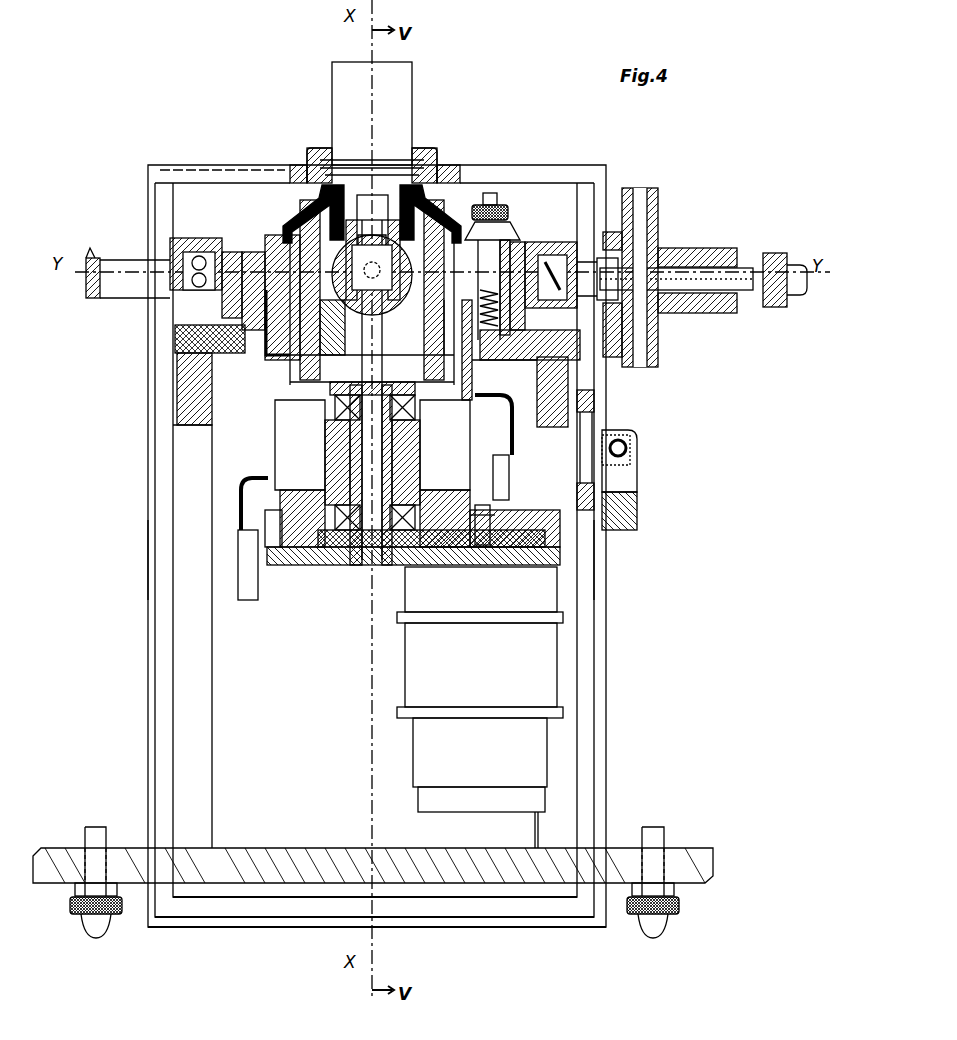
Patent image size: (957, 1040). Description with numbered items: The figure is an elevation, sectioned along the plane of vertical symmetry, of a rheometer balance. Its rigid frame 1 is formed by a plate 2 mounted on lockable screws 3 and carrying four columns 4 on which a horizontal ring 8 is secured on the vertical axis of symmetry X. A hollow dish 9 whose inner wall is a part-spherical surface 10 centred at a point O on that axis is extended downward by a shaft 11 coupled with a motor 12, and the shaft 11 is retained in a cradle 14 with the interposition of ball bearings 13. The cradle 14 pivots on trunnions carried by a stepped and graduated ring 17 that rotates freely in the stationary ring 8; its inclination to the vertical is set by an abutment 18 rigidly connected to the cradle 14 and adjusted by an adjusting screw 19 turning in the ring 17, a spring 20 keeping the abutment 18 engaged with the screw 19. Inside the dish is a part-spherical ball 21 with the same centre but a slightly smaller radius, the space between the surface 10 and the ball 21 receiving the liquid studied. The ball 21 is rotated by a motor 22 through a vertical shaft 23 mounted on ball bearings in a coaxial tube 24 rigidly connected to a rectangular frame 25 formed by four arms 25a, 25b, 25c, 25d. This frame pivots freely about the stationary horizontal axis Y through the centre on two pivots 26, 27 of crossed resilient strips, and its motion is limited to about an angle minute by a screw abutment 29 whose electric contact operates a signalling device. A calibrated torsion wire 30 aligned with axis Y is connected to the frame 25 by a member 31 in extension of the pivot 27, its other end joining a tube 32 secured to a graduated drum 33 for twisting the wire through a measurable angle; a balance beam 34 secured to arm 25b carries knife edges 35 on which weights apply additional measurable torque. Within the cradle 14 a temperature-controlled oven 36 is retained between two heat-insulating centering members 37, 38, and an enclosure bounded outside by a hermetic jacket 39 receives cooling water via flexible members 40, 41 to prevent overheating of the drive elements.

The rigid frame 1 is at (50, 890).
The plate 2 is at (268, 855).
The lockable screws 3 is at (126, 908).
The columns 4 is at (190, 441).
The horizontal ring 8 is at (186, 338).
The hollow dish 9 is at (300, 345).
The part-spherical surface 10 is at (366, 330).
The shaft 11 is at (332, 472).
The motor 12 is at (480, 707).
The ball bearings 13 is at (422, 412).
The cradle 14 is at (286, 236).
The stepped and graduated ring 17 is at (506, 258).
The abutment 18 is at (512, 286).
The adjusting screw 19 is at (498, 240).
The spring 20 is at (492, 352).
The part-spherical ball 21 is at (375, 281).
The motor 22 is at (372, 122).
The vertical shaft 23 is at (372, 228).
The coaxial tube 24 is at (388, 228).
The rectangular frame 25 is at (311, 148).
The frame arm 25a is at (258, 158).
The frame arm 25b is at (162, 551).
The frame arm 25c is at (297, 890).
The frame arm 25d is at (583, 556).
The pivot 26 is at (192, 262).
The pivot 27 is at (552, 262).
The screw abutment 29 is at (630, 447).
The calibrated torsion wire 30 is at (692, 268).
The member 31 is at (588, 300).
The tube 32 is at (690, 304).
The graduated drum 33 is at (655, 344).
The balance beam 34 is at (88, 317).
The knife edges 35 is at (90, 278).
The oven 36 is at (444, 327).
The centering member 37 is at (465, 386).
The centering member 38 is at (455, 190).
The hermetic jacket 39 is at (473, 398).
The flexible member 40 is at (504, 480).
The flexible member 41 is at (248, 480).